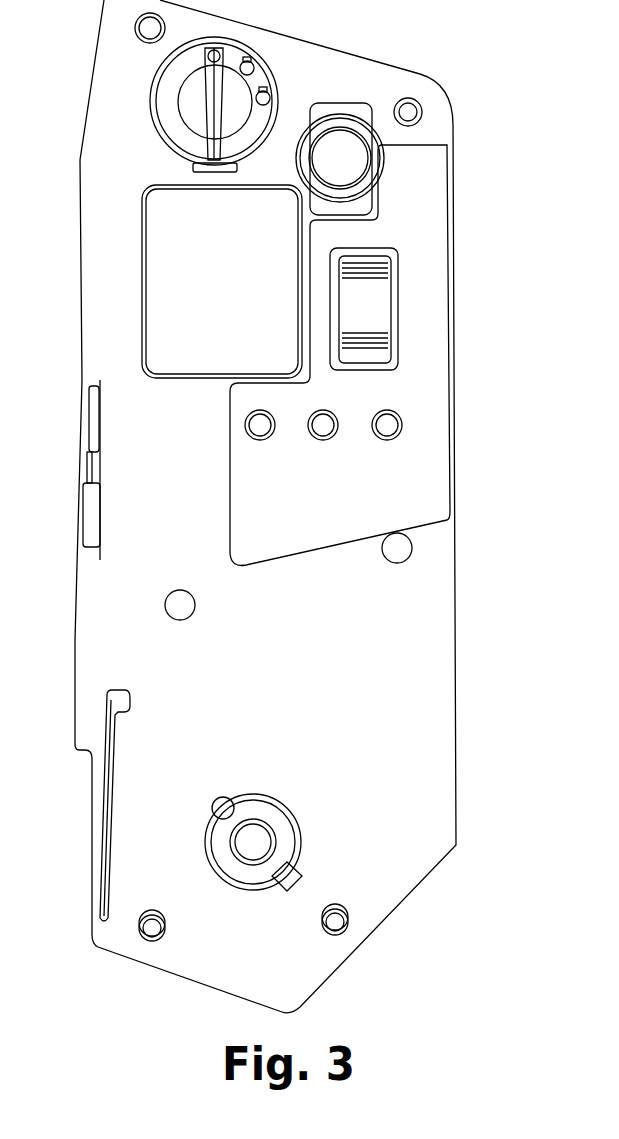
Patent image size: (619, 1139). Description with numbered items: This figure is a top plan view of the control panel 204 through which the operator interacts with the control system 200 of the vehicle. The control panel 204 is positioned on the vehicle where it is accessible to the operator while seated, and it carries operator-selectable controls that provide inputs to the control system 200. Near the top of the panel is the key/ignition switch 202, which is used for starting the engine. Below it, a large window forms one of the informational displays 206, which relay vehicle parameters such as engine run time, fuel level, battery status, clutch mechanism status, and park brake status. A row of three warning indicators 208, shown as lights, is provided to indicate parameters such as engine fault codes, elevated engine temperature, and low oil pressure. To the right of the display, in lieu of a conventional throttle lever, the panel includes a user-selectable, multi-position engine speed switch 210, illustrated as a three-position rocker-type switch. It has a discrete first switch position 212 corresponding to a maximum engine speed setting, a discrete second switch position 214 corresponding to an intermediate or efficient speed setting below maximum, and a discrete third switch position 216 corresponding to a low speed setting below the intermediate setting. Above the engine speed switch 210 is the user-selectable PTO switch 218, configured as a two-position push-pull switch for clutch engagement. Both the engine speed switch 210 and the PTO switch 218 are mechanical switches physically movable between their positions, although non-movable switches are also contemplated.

The control system 200 is at (301, 506).
The key/ignition switch 202 is at (173, 98).
The control panel 204 is at (460, 632).
The informational displays 206 is at (142, 280).
The warning indicators 208 is at (378, 438).
The engine speed switch 210 is at (421, 260).
The first switch position 212 is at (391, 252).
The second switch position 214 is at (395, 297).
The third switch position 216 is at (393, 351).
The PTO switch 218 is at (338, 115).